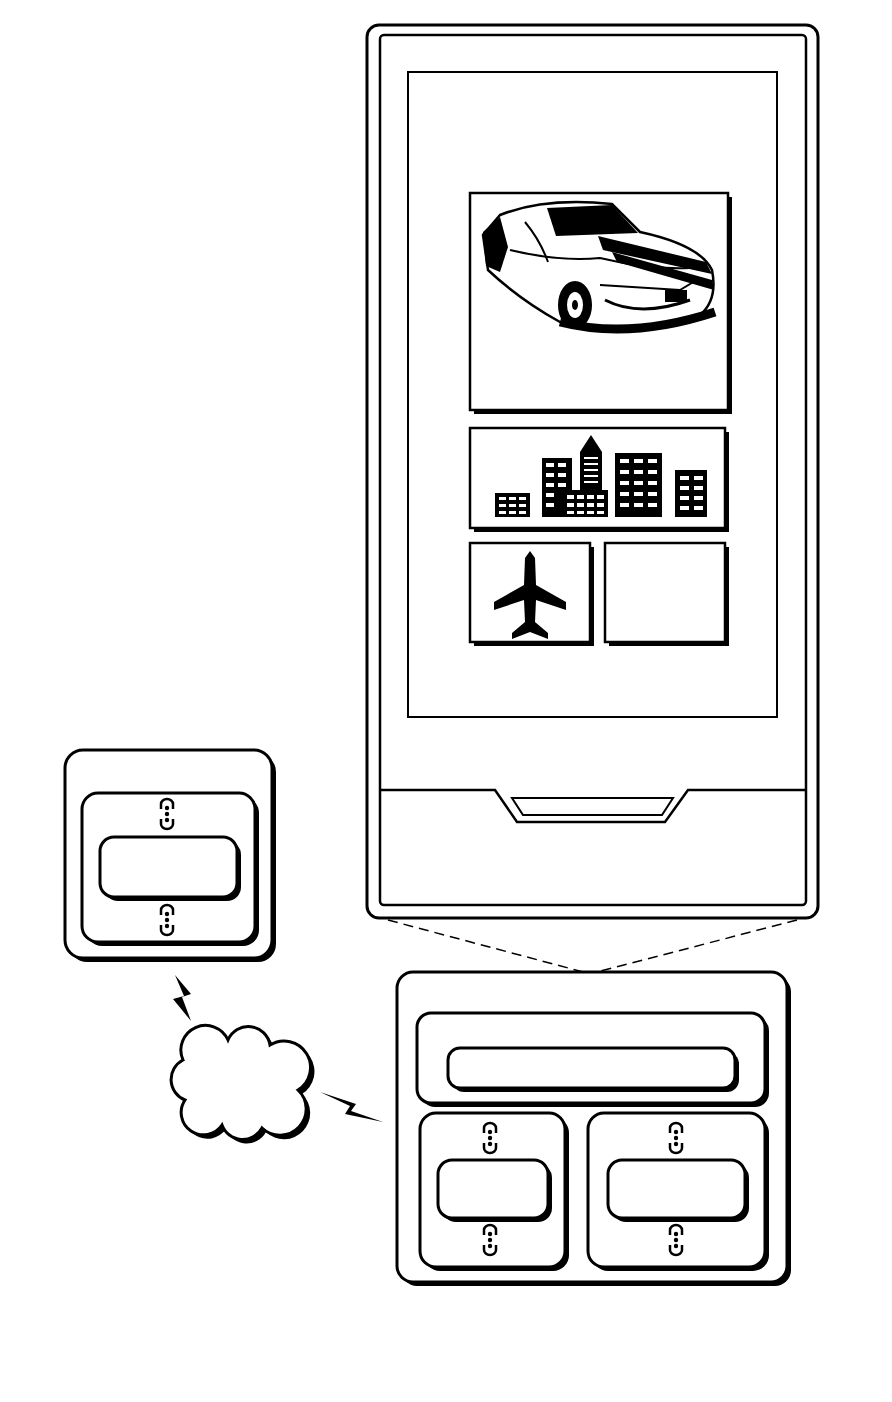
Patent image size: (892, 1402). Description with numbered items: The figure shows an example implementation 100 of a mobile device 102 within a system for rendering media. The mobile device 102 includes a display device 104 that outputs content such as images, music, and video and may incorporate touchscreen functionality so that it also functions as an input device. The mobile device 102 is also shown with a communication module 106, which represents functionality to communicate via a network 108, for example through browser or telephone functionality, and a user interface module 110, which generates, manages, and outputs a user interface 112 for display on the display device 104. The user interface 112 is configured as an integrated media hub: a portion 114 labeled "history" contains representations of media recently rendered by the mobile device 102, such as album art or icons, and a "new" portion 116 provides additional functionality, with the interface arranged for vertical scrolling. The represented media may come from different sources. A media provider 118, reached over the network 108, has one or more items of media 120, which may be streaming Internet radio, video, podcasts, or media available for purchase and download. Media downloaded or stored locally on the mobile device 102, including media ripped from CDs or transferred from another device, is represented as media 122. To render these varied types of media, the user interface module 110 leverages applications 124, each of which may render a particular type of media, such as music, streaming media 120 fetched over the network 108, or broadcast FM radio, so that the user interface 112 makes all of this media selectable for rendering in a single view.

The example implementation 100 is at (158, 52).
The mobile device 102 is at (678, 1002).
The display device 104 is at (600, 72).
The communication module 106 is at (727, 1046).
The network 108 is at (221, 1109).
The user interface module 110 is at (720, 1079).
The user interface 112 is at (592, 394).
The portion labeled "history" 114 is at (483, 146).
The "new" portion 116 is at (476, 693).
The media provider 118 is at (262, 782).
The media 120 is at (218, 877).
The media 122 is at (473, 1212).
The applications 124 is at (659, 1212).